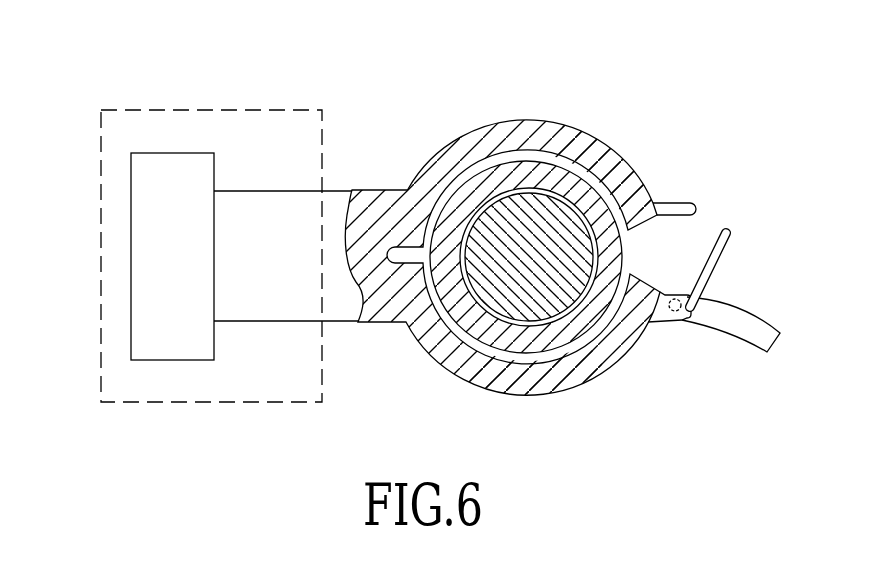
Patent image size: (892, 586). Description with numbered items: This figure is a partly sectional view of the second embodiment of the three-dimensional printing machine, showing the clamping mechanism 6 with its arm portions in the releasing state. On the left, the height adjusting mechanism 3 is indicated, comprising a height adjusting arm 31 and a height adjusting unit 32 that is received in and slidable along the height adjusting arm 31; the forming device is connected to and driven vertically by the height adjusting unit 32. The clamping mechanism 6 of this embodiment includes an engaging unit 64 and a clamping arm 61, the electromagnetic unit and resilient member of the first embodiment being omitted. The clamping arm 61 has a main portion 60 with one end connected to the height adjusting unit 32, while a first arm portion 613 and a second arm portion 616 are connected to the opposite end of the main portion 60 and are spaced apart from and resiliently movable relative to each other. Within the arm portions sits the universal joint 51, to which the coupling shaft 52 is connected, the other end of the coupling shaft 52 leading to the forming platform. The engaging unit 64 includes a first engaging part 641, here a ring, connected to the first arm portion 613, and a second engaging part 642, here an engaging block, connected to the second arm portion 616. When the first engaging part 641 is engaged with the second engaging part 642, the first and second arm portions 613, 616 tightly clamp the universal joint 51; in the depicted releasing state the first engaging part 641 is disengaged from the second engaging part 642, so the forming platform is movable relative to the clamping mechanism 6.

The height adjusting mechanism 3 is at (184, 208).
The height adjusting arm 31 is at (183, 110).
The height adjusting unit 32 is at (157, 212).
The main portion 60 is at (280, 220).
The clamping mechanism 6 is at (535, 227).
The clamping arm 61 is at (425, 128).
The second arm portion 616 is at (585, 143).
The first arm portion 613 is at (572, 367).
The second engaging part 642 is at (692, 202).
The universal joint 51 is at (498, 170).
The coupling shaft 52 is at (530, 228).
The engaging unit 64 is at (719, 327).
The first engaging part 641 is at (720, 252).